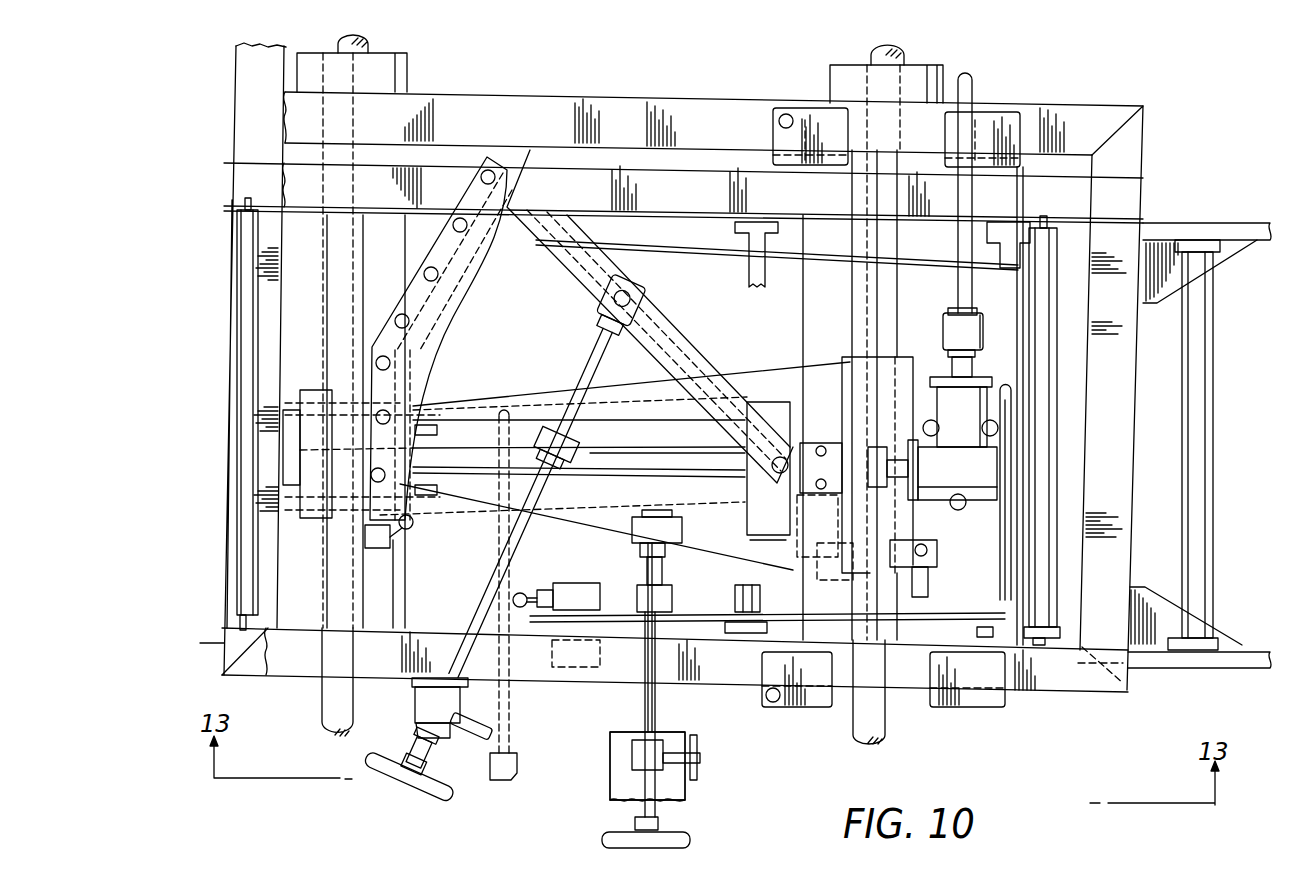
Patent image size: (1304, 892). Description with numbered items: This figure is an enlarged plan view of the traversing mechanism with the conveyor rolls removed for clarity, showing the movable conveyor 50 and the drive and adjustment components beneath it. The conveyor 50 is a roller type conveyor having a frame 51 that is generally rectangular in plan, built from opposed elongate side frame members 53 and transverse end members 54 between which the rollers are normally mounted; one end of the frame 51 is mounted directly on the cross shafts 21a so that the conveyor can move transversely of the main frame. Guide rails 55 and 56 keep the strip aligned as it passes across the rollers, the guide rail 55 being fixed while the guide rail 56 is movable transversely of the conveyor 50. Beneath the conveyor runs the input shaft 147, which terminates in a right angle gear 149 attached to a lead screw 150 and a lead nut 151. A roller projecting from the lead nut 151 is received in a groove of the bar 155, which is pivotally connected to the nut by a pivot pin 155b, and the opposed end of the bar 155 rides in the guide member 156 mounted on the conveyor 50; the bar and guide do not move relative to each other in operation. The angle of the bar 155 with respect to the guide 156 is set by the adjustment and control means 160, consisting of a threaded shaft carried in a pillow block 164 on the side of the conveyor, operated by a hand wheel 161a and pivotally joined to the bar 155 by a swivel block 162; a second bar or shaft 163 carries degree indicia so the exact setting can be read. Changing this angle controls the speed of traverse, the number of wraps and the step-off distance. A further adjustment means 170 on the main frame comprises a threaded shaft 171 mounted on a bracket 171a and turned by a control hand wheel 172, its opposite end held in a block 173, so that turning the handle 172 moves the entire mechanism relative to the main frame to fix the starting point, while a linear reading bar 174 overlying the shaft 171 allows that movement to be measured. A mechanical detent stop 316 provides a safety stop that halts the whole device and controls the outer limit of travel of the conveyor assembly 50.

The movable conveyor 50 is at (1153, 158).
The frame 51 is at (1131, 498).
The side frame members 53 is at (641, 93).
The transverse end members 54 is at (222, 643).
The guide rail 55 is at (696, 264).
The guide rail 56 is at (698, 612).
The cross shafts 21a is at (325, 704).
The input shaft 147 is at (960, 294).
The right angle gear 149 is at (983, 497).
The lead screw 150 is at (674, 466).
The lead nut 151 is at (762, 398).
The bar 155 is at (690, 332).
The pivot pin 155b is at (765, 480).
The guide member 156 is at (455, 304).
The adjustment and control means 160 is at (378, 778).
The hand wheel 161a is at (432, 796).
The swivel block 162 is at (606, 307).
The second bar or shaft 163 is at (493, 575).
The pillow block 164 is at (417, 701).
The adjustment means 170 is at (705, 783).
The threaded shaft 171 is at (658, 713).
The bracket 171a is at (610, 744).
The control hand wheel 172 is at (690, 837).
The block 173 is at (640, 543).
The linear reading bar 174 is at (645, 706).
The mechanical detent stop 316 is at (575, 587).